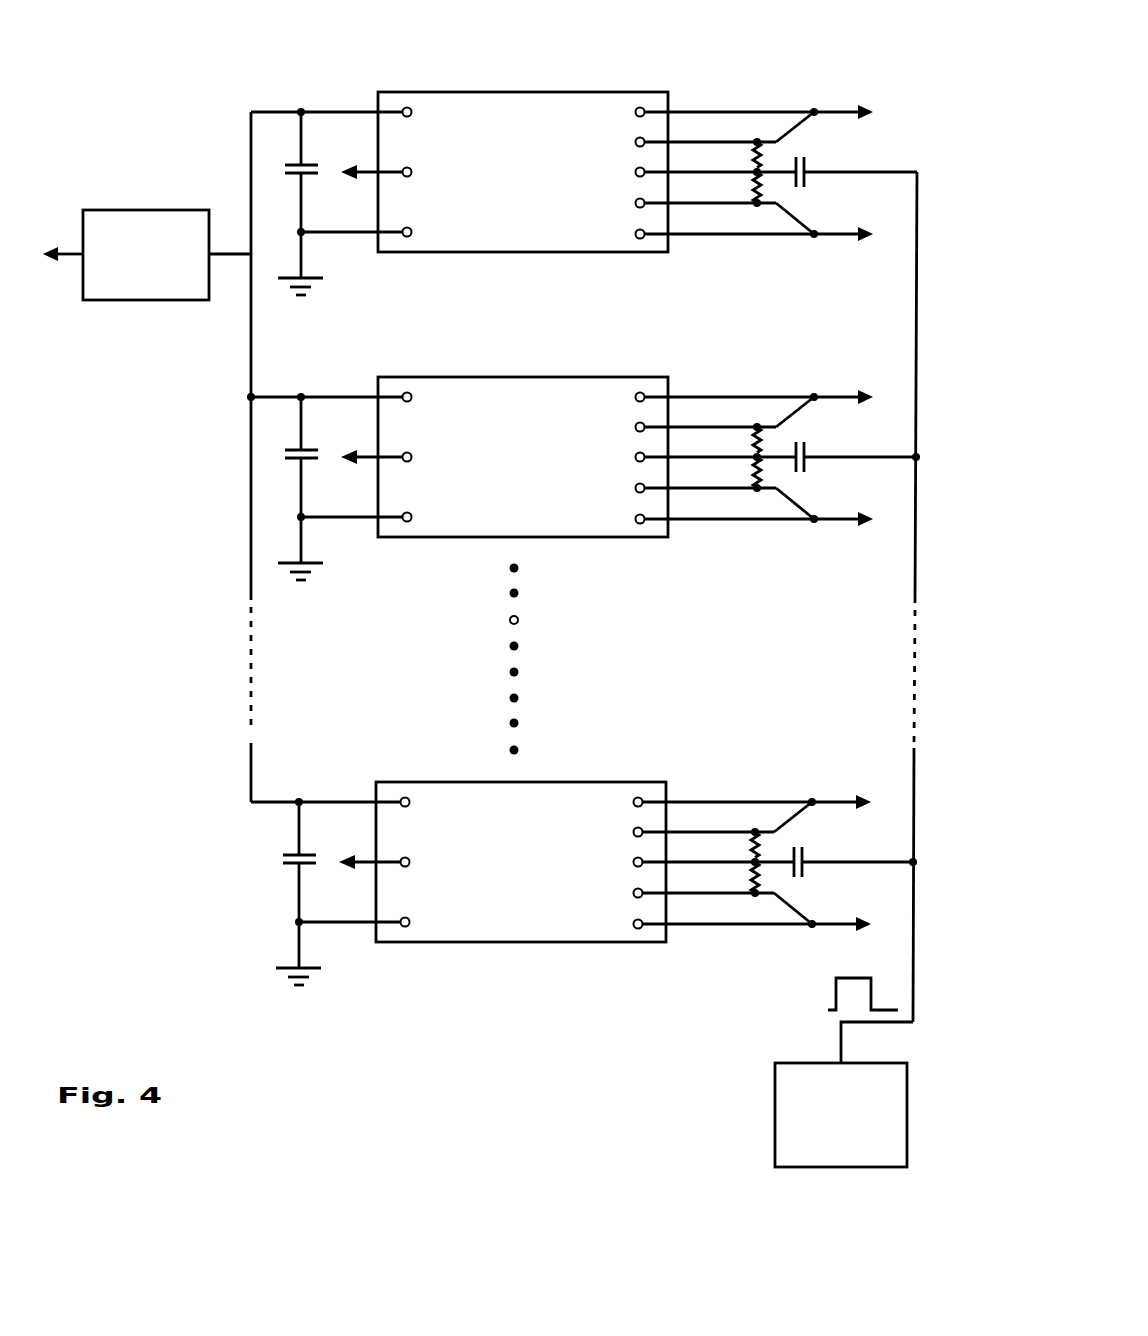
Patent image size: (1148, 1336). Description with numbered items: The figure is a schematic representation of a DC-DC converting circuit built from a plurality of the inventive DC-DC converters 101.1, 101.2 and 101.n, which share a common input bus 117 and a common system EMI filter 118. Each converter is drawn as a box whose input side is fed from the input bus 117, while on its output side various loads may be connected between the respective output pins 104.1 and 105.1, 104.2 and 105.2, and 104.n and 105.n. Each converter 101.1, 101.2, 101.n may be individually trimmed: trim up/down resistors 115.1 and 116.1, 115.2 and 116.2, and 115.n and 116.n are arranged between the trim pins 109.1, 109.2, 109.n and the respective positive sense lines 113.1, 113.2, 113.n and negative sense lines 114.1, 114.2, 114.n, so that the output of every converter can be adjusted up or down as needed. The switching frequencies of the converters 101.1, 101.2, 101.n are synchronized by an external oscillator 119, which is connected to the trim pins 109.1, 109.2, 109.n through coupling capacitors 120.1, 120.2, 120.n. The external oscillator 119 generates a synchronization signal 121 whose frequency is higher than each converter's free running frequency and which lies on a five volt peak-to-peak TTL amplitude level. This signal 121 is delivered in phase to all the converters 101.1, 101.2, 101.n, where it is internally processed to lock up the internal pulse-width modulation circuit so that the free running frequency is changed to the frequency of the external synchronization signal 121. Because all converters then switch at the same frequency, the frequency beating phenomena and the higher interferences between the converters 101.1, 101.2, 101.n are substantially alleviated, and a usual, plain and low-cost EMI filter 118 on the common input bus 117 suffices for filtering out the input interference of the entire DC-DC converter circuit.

The DC-DC converter 101.1 is at (528, 98).
The DC-DC converter 101.2 is at (511, 448).
The DC-DC converter 101.n is at (512, 853).
The output pin 104.1 is at (641, 106).
The output pin 104.2 is at (720, 363).
The output pin 104.n is at (717, 768).
The output pin 105.1 is at (641, 239).
The output pin 105.2 is at (705, 552).
The output pin 105.n is at (701, 957).
The trim pin 109.1 is at (636, 170).
The trim pin 109.2 is at (663, 444).
The trim pin 109.n is at (661, 849).
The positive sense line 113.1 is at (725, 142).
The positive sense line 113.2 is at (799, 383).
The positive sense line 113.n is at (794, 788).
The negative sense line 114.1 is at (735, 204).
The negative sense line 114.2 is at (777, 533).
The negative sense line 114.n is at (774, 938).
The trim up/down resistor 115.1 is at (762, 162).
The trim up/down resistor 115.2 is at (816, 438).
The trim up/down resistor 115.n is at (813, 838).
The trim up/down resistor 116.1 is at (763, 185).
The trim up/down resistor 116.2 is at (814, 480).
The trim up/down resistor 116.n is at (809, 885).
The coupling capacitor 120.1 is at (818, 181).
The coupling capacitor 120.2 is at (878, 451).
The coupling capacitor 120.n is at (854, 856).
The common input bus 117 is at (250, 448).
The common system EMI filter 118 is at (132, 283).
The external oscillator 119 is at (838, 1153).
The synchronization signal 121 is at (830, 986).